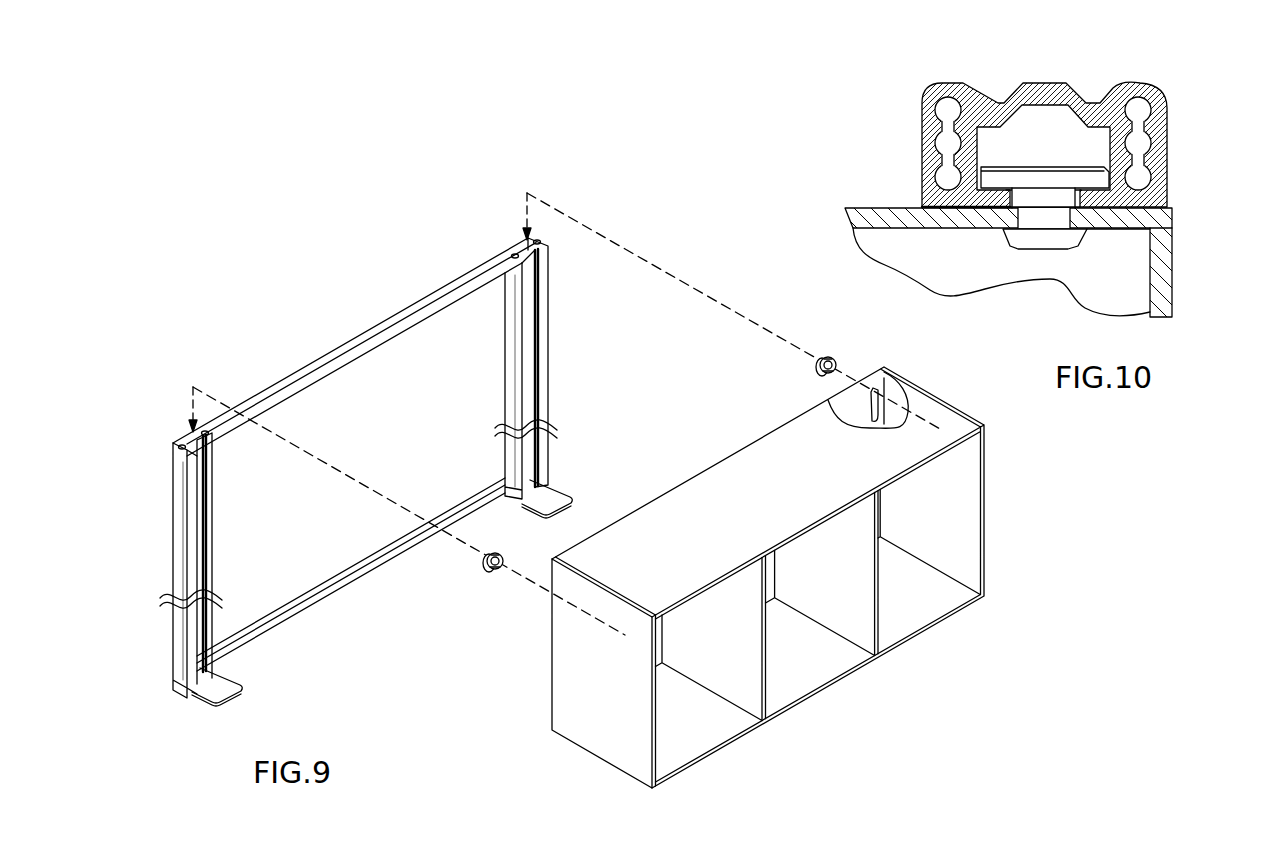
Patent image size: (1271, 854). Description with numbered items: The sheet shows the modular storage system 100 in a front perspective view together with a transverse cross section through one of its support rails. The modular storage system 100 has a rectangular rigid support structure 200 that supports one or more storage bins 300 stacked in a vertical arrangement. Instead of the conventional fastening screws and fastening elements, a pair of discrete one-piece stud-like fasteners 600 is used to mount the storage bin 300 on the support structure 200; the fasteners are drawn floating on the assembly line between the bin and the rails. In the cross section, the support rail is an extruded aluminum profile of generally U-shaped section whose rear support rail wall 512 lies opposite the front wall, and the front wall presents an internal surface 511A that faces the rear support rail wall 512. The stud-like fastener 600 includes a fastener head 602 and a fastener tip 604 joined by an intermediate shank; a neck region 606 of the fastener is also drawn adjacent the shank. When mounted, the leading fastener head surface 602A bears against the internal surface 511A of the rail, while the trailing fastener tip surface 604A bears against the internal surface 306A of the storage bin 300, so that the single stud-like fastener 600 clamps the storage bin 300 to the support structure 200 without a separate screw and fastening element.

In FIG. 9, the modular storage system 100 is at (328, 247).
In FIG. 9, the support structure 200 is at (288, 322).
In FIG. 9, the storage bin 300 is at (962, 670).
In FIG. 10, the storage bin 300 is at (1172, 266).
In FIG. 9, the stud-like fastener 600 is at (483, 568).
In FIG. 10, the rear support rail wall 512 is at (942, 85).
In FIG. 10, the fastener neck 606 is at (1030, 196).
In FIG. 10, the internal surface 511A is at (940, 166).
In FIG. 10, the fastener head 602 is at (1066, 173).
In FIG. 10, the leading fastener head surface 602A is at (1127, 157).
In FIG. 10, the fastener tip 604 is at (1022, 243).
In FIG. 10, the trailing fastener tip surface 604A is at (1082, 225).
In FIG. 10, the internal surface 306A is at (1127, 229).